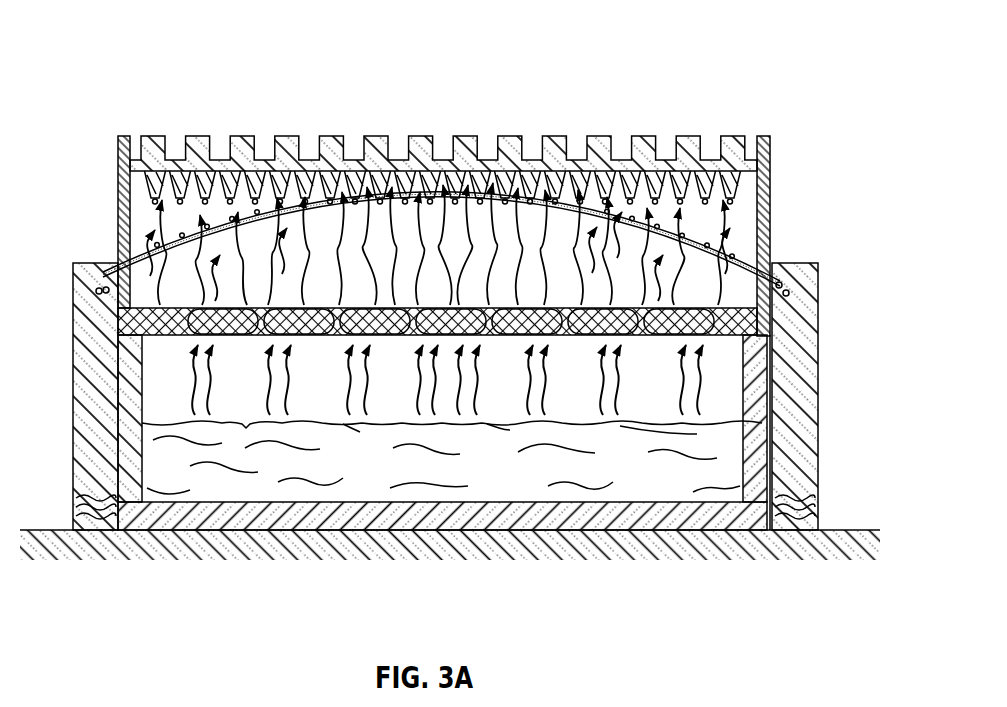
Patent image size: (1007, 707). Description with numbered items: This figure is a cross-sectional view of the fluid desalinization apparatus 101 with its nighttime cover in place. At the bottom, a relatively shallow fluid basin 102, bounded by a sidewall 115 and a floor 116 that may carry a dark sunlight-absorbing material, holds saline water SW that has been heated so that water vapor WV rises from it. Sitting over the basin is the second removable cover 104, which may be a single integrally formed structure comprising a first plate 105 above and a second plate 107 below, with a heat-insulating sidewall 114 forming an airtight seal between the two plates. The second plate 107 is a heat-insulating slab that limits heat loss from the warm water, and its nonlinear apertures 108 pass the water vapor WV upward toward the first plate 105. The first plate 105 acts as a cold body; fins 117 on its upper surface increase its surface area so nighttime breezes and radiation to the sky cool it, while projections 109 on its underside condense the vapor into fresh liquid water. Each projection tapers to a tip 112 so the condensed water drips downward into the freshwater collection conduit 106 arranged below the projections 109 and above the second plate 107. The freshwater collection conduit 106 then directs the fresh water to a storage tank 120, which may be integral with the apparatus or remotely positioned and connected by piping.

The fluid desalinization apparatus 101 is at (120, 40).
The fluid basin 102 is at (645, 513).
The second removable cover 104 is at (408, 188).
The first plate 105 is at (728, 162).
The freshwater collection conduit 106 is at (118, 262).
The second plate 107 is at (749, 322).
The nonlinear apertures 108 is at (345, 340).
The projections 109 is at (663, 180).
The tips 112 is at (668, 216).
The sidewall 114 is at (118, 150).
The sidewall 115 is at (125, 450).
The floor 116 is at (367, 522).
The fins 117 is at (192, 138).
The storage tank 120 is at (88, 402).
The water vapor WV is at (703, 373).
The saline water SW is at (515, 490).